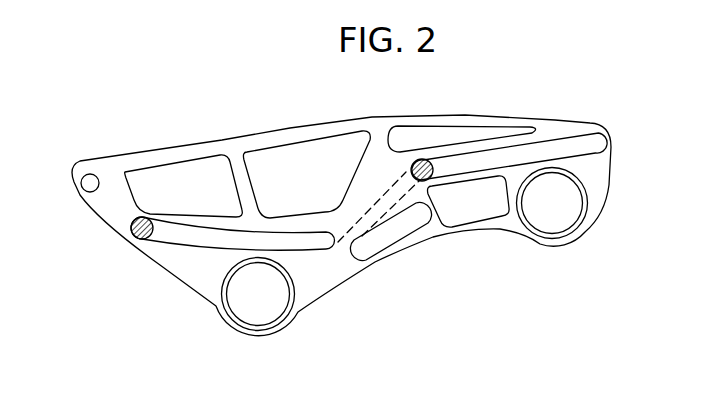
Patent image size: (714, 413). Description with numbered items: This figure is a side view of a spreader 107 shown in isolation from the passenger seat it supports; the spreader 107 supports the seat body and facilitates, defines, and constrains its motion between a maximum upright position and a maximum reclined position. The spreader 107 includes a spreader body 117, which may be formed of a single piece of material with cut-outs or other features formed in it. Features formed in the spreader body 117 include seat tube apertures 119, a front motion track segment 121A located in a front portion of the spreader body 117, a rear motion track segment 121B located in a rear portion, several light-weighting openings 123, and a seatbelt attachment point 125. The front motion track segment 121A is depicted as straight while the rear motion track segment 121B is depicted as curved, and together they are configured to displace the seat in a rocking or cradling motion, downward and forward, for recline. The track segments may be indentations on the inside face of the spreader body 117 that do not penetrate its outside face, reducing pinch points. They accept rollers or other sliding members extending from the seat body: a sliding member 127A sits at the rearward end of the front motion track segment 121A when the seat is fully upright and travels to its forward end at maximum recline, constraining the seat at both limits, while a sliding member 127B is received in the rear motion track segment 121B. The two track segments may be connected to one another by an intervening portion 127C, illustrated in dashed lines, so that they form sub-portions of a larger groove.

The spreader 107 is at (163, 106).
The spreader body 117 is at (297, 80).
The seat tube apertures 119 is at (243, 304).
The front motion track segment 121A is at (555, 140).
The rear motion track segment 121B is at (203, 251).
The light-weighting openings 123 is at (169, 196).
The seatbelt attachment point 125 is at (91, 174).
The sliding member 127A is at (434, 166).
The sliding member 127B is at (136, 240).
The intervening portion 127C is at (360, 228).